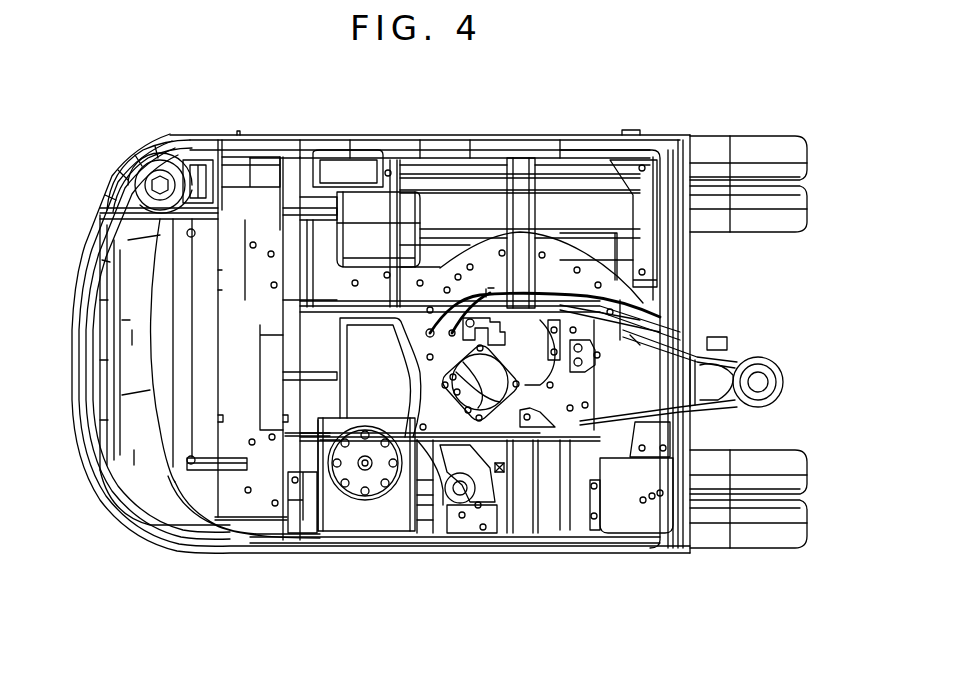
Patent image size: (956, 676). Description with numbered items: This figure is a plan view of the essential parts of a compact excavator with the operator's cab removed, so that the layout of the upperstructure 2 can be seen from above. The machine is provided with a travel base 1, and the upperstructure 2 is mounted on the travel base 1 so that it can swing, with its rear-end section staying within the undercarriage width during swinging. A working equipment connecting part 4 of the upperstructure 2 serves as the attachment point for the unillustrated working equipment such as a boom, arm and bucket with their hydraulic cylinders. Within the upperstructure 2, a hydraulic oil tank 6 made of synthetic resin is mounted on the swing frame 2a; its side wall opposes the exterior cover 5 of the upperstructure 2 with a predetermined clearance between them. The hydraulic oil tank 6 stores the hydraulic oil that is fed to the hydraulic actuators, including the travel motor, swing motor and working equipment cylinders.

The travel base 1 is at (764, 136).
The upperstructure 2 is at (499, 124).
The swing frame 2a is at (521, 230).
The working equipment connecting part 4 is at (764, 354).
The exterior cover 5 is at (302, 548).
The hydraulic oil tank 6 is at (383, 518).